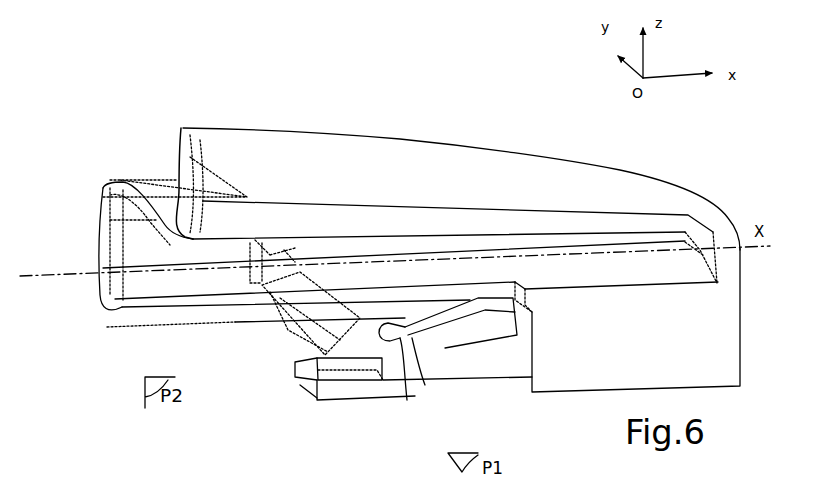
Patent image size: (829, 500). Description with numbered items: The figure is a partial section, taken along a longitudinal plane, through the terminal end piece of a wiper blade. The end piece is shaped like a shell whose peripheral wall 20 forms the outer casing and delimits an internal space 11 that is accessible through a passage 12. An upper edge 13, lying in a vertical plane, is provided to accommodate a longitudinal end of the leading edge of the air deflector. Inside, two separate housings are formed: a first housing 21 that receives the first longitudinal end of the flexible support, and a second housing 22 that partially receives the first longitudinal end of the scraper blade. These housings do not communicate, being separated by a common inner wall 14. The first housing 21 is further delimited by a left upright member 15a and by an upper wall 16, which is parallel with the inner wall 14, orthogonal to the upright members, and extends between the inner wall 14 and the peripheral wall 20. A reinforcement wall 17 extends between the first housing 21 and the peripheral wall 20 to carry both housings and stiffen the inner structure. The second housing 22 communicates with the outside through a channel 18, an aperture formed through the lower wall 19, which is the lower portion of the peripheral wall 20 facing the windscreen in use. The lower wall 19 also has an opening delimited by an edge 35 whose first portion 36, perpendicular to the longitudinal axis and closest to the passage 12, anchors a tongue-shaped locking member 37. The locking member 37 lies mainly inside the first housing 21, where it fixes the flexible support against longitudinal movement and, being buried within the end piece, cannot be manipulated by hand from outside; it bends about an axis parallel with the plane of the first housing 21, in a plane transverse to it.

The internal space 11 is at (140, 243).
The passage 12 is at (138, 367).
The upper edge 13 is at (183, 128).
The inner wall 14 is at (343, 312).
The left upright member 15a is at (250, 253).
The upper wall 16 is at (283, 250).
The reinforcement wall 17 is at (292, 245).
The channel 18 is at (285, 358).
The lower wall 19 is at (90, 317).
The peripheral wall 20 is at (125, 185).
The first housing 21 is at (292, 281).
The second housing 22 is at (283, 321).
The edge 35 is at (445, 348).
The first portion 36 is at (407, 400).
The locking member 37 is at (456, 369).